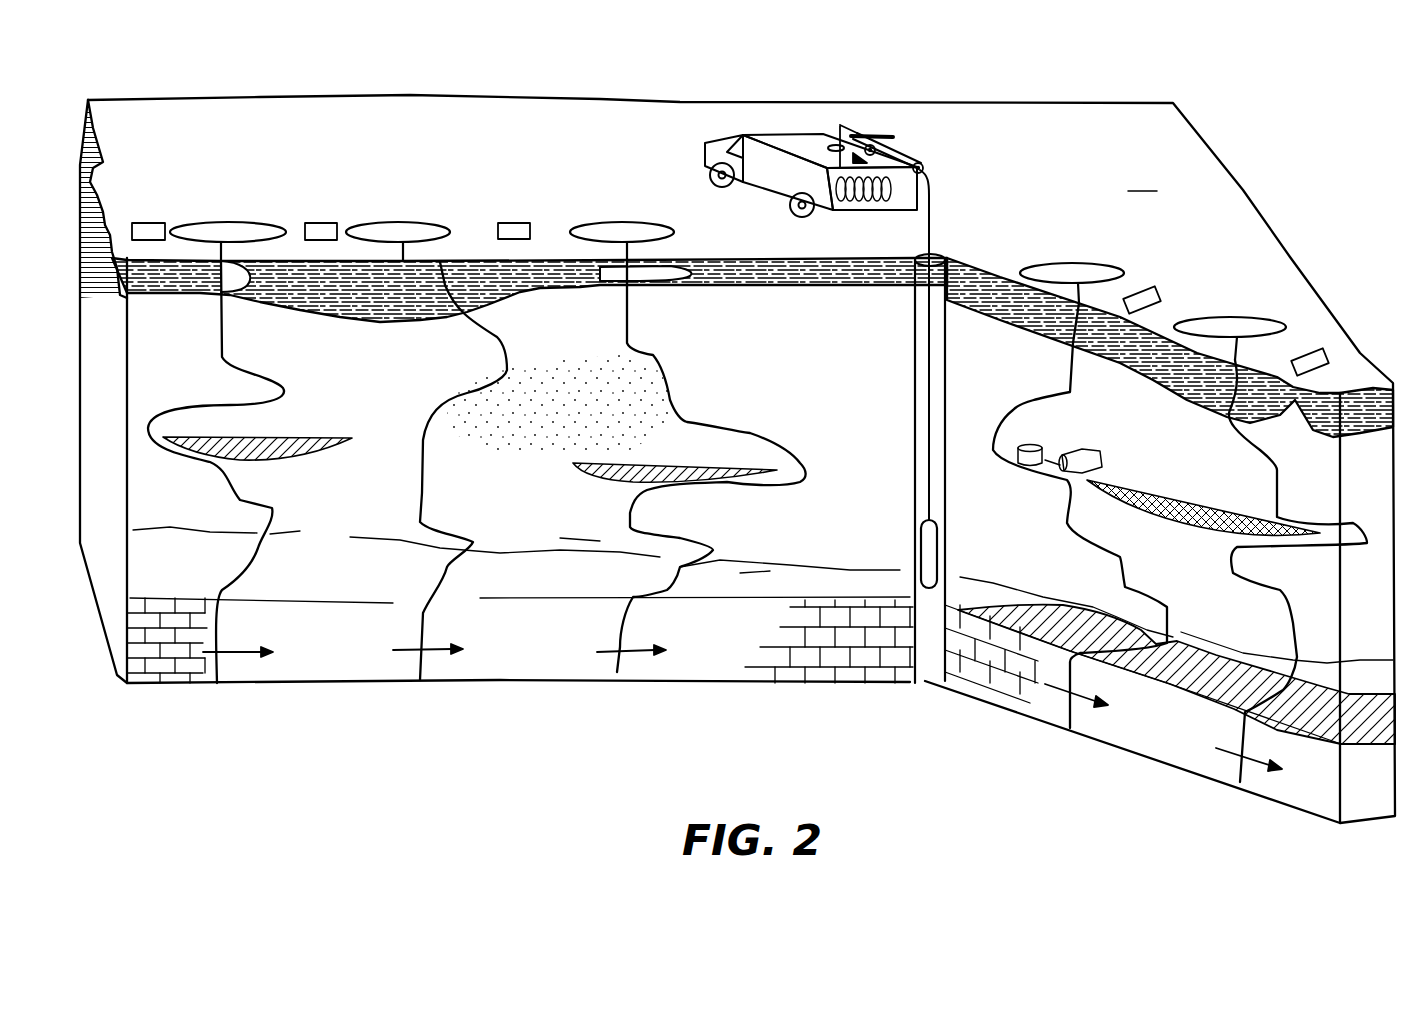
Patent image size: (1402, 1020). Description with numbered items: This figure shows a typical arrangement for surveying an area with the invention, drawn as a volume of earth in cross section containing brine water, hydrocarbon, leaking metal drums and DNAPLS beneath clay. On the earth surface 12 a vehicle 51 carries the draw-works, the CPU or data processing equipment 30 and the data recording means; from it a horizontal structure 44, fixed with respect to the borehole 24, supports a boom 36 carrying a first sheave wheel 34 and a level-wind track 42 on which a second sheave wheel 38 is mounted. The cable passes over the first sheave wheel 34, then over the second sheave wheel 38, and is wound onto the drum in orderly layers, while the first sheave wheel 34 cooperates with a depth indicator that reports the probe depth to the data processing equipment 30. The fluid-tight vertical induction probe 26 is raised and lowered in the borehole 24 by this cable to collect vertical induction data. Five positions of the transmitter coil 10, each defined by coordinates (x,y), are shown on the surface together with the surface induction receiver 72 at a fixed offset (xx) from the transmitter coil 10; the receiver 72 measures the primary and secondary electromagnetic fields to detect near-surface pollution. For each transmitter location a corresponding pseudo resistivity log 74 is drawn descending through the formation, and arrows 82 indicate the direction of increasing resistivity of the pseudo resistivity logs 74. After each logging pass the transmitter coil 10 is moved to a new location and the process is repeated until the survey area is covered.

The transmitter coil 10 is at (1200, 317).
The earth surface 12 is at (737, 459).
The borehole 24 is at (913, 365).
The vertical induction probe 26 is at (940, 546).
The data processing equipment 30 is at (933, 222).
The first sheave wheel 34 is at (925, 167).
The boom 36 is at (877, 145).
The second sheave wheel 38 is at (913, 148).
The level-wind track 42 is at (850, 208).
The horizontal structure 44 is at (870, 213).
The vehicle 51 is at (768, 185).
The surface induction receiver 72 is at (1307, 352).
The pseudo resistivity log 74 is at (1288, 605).
The arrow 82 is at (1286, 757).